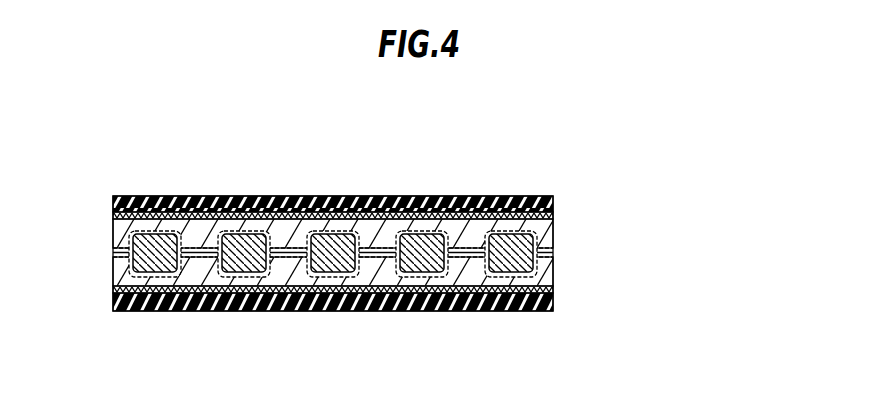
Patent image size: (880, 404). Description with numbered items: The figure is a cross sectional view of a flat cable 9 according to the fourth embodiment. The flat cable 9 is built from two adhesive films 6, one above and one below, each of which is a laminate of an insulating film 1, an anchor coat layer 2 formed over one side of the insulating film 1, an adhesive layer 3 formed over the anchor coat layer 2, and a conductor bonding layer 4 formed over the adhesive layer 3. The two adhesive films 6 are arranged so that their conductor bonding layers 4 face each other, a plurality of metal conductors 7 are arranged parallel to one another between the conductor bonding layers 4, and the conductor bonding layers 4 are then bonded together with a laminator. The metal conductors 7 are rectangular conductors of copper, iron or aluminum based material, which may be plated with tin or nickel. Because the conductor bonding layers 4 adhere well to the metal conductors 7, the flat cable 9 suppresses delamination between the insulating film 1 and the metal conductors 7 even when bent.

The insulating film 1 is at (113, 207).
The anchor coat layer 2 is at (113, 218).
The adhesive layer 3 is at (113, 231).
The conductor bonding layer 4 is at (116, 247).
The adhesive film 6 is at (63, 145).
The metal conductor 7 is at (537, 241).
The flat cable 9 is at (421, 167).